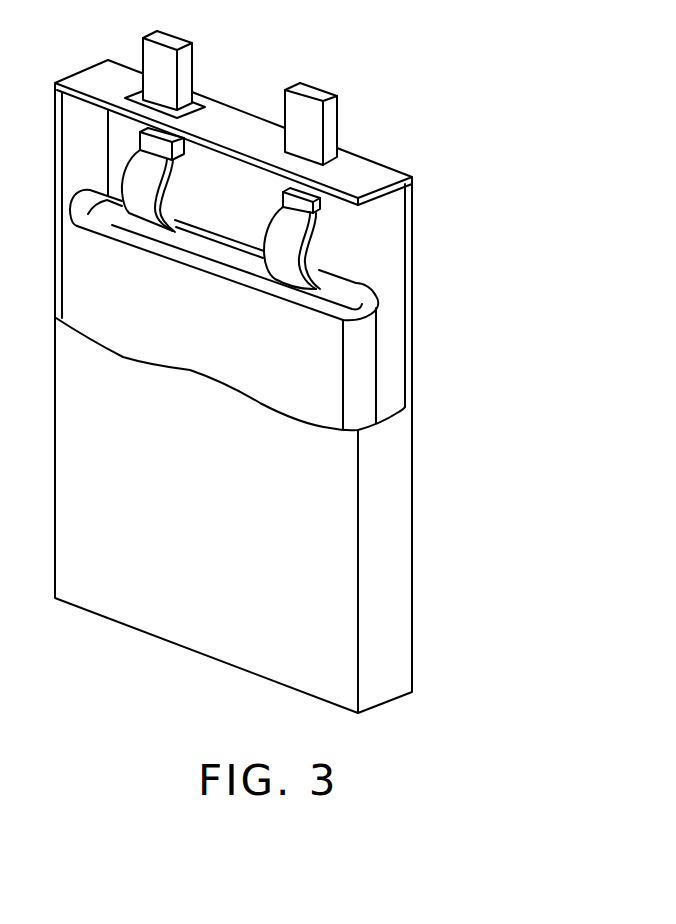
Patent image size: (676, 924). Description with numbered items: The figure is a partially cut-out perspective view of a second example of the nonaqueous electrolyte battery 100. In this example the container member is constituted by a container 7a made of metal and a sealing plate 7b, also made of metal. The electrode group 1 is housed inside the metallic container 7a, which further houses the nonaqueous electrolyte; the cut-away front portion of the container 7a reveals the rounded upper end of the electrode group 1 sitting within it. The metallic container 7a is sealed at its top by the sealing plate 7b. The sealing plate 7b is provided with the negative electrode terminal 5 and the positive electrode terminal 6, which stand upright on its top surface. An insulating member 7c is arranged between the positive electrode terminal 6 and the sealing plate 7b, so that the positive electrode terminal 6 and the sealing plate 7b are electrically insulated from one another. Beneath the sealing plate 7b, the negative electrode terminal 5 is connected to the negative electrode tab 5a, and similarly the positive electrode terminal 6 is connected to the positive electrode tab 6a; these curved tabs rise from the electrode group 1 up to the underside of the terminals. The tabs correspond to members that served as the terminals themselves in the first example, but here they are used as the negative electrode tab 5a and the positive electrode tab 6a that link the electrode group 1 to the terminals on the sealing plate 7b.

The nonaqueous electrolyte battery 100 is at (460, 449).
The electrode group 1 is at (386, 324).
The negative electrode terminal 5 is at (331, 122).
The negative electrode tab 5a is at (288, 245).
The positive electrode terminal 6 is at (187, 63).
The positive electrode tab 6a is at (142, 190).
The container 7a is at (392, 530).
The sealing plate 7b is at (350, 167).
The insulating member 7c is at (203, 100).